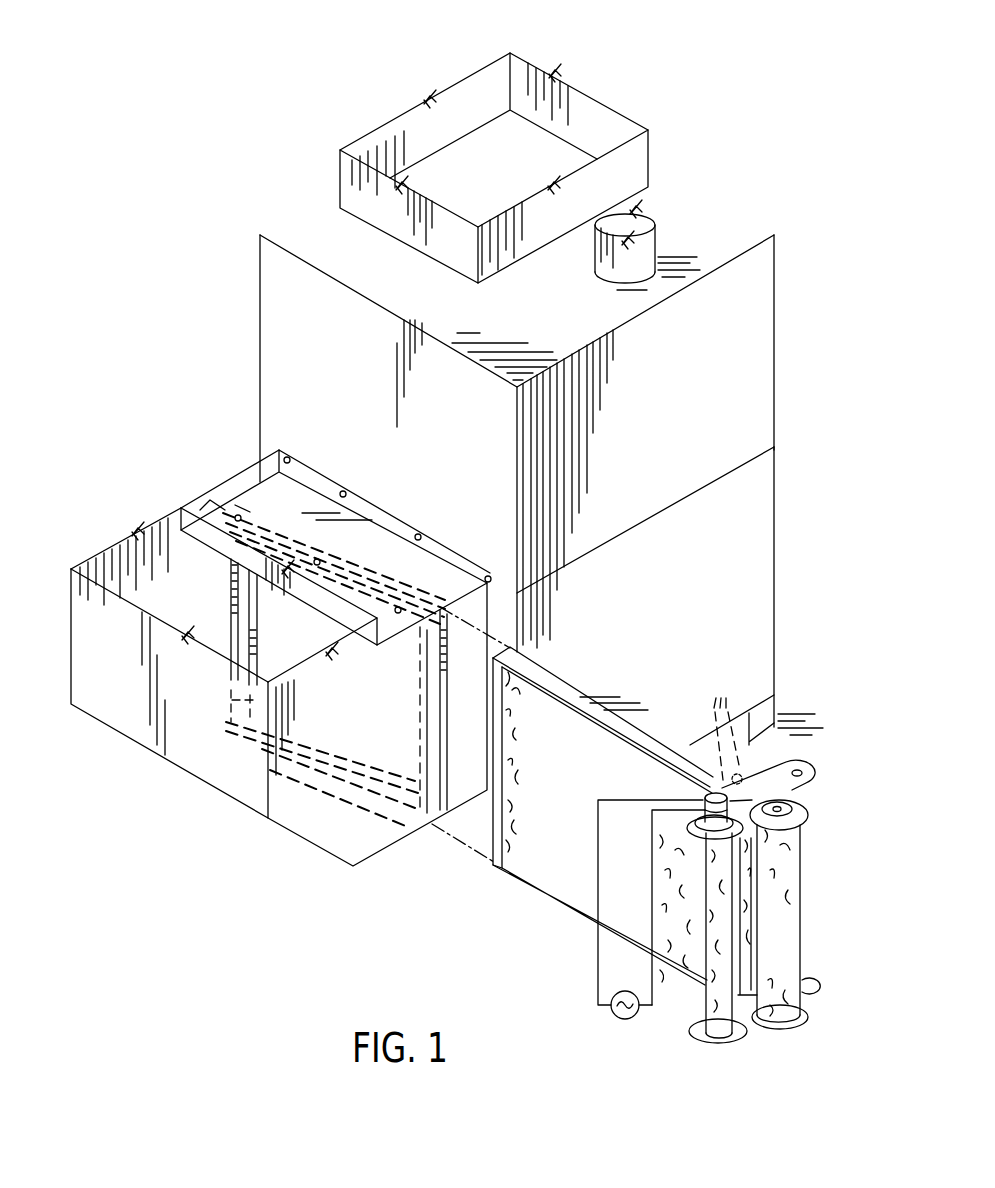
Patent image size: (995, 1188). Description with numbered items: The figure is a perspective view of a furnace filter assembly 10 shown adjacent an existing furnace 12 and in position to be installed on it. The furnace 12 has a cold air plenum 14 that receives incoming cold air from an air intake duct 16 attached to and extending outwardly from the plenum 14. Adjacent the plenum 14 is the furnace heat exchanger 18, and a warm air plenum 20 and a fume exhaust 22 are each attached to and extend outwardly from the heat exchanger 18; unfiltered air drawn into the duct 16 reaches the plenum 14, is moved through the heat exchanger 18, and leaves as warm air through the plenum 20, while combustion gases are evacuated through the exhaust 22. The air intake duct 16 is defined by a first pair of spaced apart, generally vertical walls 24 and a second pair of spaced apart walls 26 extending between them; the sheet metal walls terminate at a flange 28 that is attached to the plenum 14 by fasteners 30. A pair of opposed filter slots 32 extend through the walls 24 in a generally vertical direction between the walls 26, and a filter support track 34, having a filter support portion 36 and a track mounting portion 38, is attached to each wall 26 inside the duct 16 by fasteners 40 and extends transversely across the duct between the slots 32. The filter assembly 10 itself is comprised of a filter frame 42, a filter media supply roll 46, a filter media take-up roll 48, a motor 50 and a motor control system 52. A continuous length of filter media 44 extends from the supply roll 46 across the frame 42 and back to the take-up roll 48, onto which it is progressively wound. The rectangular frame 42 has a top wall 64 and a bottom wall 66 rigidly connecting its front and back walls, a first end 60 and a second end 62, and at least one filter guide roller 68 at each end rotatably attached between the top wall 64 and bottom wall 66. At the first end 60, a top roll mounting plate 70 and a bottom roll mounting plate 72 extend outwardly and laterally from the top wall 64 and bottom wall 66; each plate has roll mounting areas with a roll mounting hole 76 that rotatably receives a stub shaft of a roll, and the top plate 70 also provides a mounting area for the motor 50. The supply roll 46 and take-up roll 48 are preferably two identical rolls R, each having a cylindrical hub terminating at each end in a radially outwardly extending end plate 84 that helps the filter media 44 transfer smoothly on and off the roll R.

The furnace filter assembly 10 is at (600, 1063).
The furnace 12 is at (158, 232).
The cold air plenum 14 is at (750, 497).
The air intake duct 16 is at (152, 512).
The heat exchanger 18 is at (740, 378).
The warm air plenum 20 is at (580, 107).
The fume exhaust 22 is at (653, 222).
The first pair of spaced apart walls 24 is at (118, 532).
The second pair of spaced apart walls 26 is at (130, 720).
The flange 28 is at (332, 470).
The fasteners 30 is at (343, 489).
The filter slots 32 is at (243, 587).
The filter support track 34 is at (420, 592).
The filter support portion 36 is at (403, 582).
The track mounting portion 38 is at (363, 582).
The fasteners 40 is at (317, 559).
The filter frame 42 is at (625, 713).
The filter media 44 is at (555, 828).
The filter media supply roll 46 is at (802, 908).
The filter media take-up roll 48 is at (707, 960).
The motor 50 is at (700, 790).
The motor control system 52 is at (607, 1015).
The first end 60 is at (740, 1062).
The second end 62 is at (480, 870).
The top wall 64 is at (557, 687).
The bottom wall 66 is at (557, 898).
The filter guide roller 68 is at (530, 657).
The top roll mounting plate 70 is at (764, 776).
The bottom roll mounting plate 72 is at (755, 1035).
The roll mounting hole 76 is at (798, 768).
The end plate 84 is at (752, 823).
The roll R is at (712, 1053).